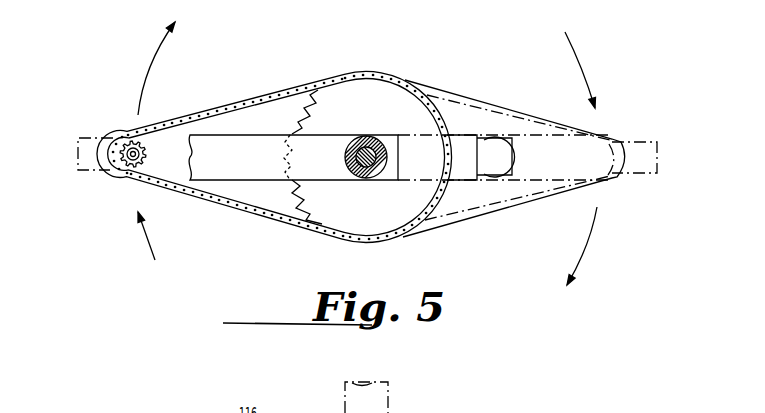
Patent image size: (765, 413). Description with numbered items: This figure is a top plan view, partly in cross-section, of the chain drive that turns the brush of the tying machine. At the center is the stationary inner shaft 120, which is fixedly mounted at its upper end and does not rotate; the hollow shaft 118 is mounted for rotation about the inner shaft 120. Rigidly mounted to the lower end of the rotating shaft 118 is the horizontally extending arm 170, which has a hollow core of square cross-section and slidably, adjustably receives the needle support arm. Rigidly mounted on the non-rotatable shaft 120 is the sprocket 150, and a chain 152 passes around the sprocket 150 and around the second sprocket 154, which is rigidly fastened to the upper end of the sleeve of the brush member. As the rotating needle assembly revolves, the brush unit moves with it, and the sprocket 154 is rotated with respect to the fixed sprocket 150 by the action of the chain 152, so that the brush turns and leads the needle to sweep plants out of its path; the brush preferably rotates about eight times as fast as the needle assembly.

The hollow shaft 118 is at (372, 178).
The inner shaft 120 is at (365, 150).
The sprocket 150 is at (385, 102).
The chain 152 is at (248, 98).
The sprocket 154 is at (152, 125).
The horizontally extending arm 170 is at (248, 165).